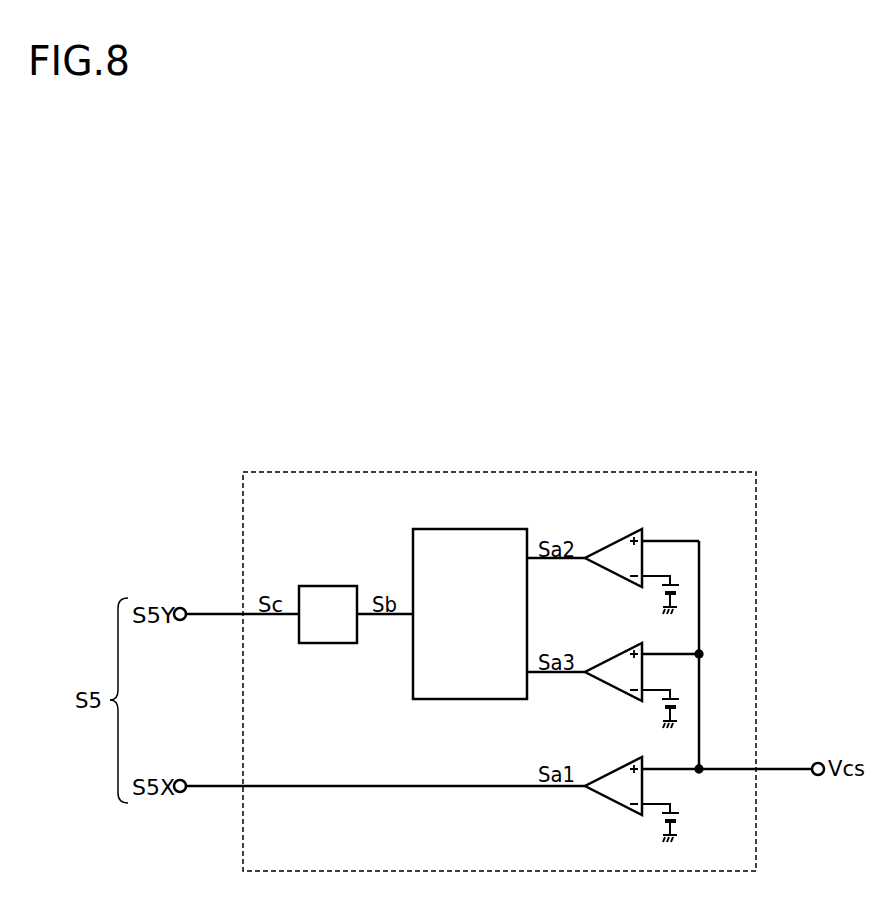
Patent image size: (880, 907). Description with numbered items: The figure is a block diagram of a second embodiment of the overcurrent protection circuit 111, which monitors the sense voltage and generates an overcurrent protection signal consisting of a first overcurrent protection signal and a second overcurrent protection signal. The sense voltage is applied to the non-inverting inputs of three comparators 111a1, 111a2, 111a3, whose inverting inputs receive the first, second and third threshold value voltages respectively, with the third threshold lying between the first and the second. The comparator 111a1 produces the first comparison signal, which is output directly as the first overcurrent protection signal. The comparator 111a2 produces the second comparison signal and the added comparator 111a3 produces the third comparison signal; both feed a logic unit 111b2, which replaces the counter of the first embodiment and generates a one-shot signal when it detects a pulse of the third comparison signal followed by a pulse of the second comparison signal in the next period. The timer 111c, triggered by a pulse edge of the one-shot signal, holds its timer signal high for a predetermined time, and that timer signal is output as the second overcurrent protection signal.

The overcurrent protection circuit 111 is at (500, 472).
The logic unit 111b2 is at (471, 529).
The timer 111c is at (327, 586).
The comparator 111a1 is at (613, 765).
The comparator 111a2 is at (613, 538).
The comparator 111a3 is at (613, 651).